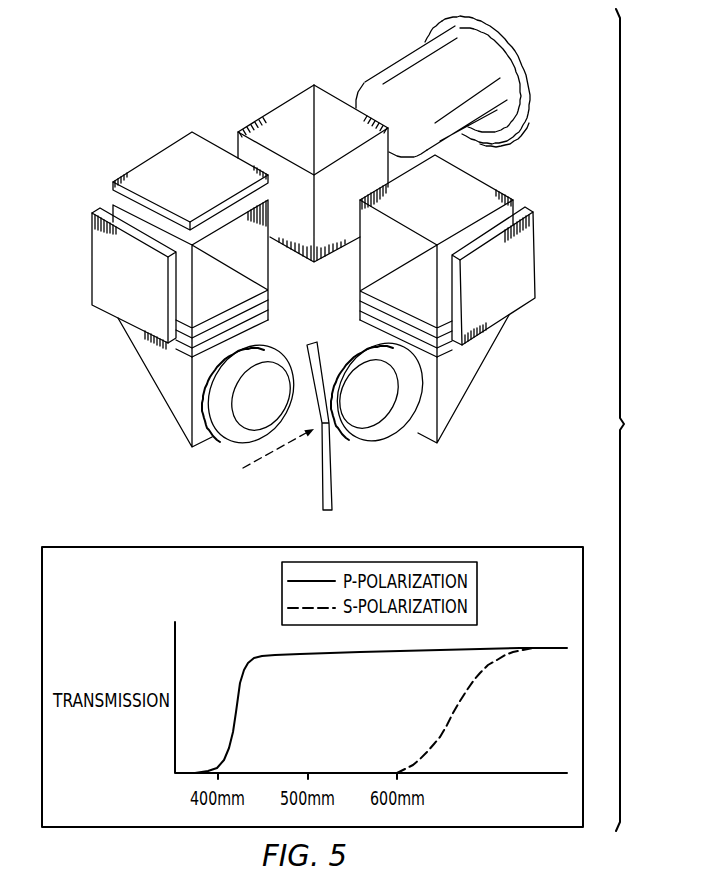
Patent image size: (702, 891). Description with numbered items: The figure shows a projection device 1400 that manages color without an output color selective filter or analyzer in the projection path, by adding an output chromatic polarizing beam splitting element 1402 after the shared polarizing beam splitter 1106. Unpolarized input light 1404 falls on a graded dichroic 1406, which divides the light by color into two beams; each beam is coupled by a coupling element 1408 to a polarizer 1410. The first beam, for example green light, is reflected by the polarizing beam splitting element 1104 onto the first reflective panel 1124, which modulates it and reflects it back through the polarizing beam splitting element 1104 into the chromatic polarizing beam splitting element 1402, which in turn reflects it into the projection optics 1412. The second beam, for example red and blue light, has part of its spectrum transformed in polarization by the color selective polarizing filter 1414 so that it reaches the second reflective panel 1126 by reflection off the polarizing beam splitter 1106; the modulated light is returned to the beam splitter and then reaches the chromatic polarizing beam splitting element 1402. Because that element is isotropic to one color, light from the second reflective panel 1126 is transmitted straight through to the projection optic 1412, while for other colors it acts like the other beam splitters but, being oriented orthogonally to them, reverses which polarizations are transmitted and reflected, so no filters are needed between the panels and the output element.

The projection device 1400 is at (143, 63).
The chromatic polarizing beam splitting element 1402 is at (280, 113).
The projection optics 1412 is at (527, 48).
The polarizing beam splitter 1106 is at (126, 202).
The polarizing beam splitting element 1104 is at (463, 175).
The second reflective panel 1126 is at (107, 307).
The first reflective panel 1124 is at (523, 303).
The color selective polarizing filter 1414 is at (265, 297).
The polarizer 1410 is at (360, 296).
The coupling element 1408 is at (162, 380).
The unpolarized input light 1404 is at (243, 468).
The graded dichroic 1406 is at (333, 488).